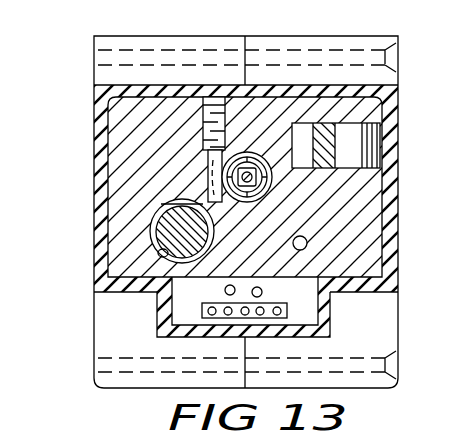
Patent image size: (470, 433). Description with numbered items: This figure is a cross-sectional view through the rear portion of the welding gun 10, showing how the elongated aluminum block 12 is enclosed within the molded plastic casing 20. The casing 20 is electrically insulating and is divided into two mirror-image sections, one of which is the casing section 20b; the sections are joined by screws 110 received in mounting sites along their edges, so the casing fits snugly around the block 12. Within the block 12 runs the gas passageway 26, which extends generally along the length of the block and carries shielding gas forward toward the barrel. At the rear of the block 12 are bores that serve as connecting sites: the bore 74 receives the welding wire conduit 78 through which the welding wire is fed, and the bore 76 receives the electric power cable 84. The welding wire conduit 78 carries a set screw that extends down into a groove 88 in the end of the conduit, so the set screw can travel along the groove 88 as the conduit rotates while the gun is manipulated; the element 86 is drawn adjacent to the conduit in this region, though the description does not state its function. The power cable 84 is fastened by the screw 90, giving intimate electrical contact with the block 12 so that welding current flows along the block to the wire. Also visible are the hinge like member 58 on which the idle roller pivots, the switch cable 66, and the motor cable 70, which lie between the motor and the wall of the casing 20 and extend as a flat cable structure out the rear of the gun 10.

The welding gun 10 is at (197, 50).
The casing 20 is at (298, 36).
The casing section 20b is at (397, 338).
The block 12 is at (118, 127).
The passageway 26 is at (306, 239).
The hinge like member 58 is at (381, 146).
The cable 66 is at (263, 294).
The cable 70 is at (202, 313).
The bore 74 is at (266, 192).
The bore 76 is at (110, 258).
The welding wire conduit 78 is at (248, 160).
The power cable 84 is at (167, 233).
The screw shaft bore 86 is at (206, 162).
The groove 88 is at (246, 202).
The screw 90 is at (162, 205).
The screws 110 is at (150, 376).